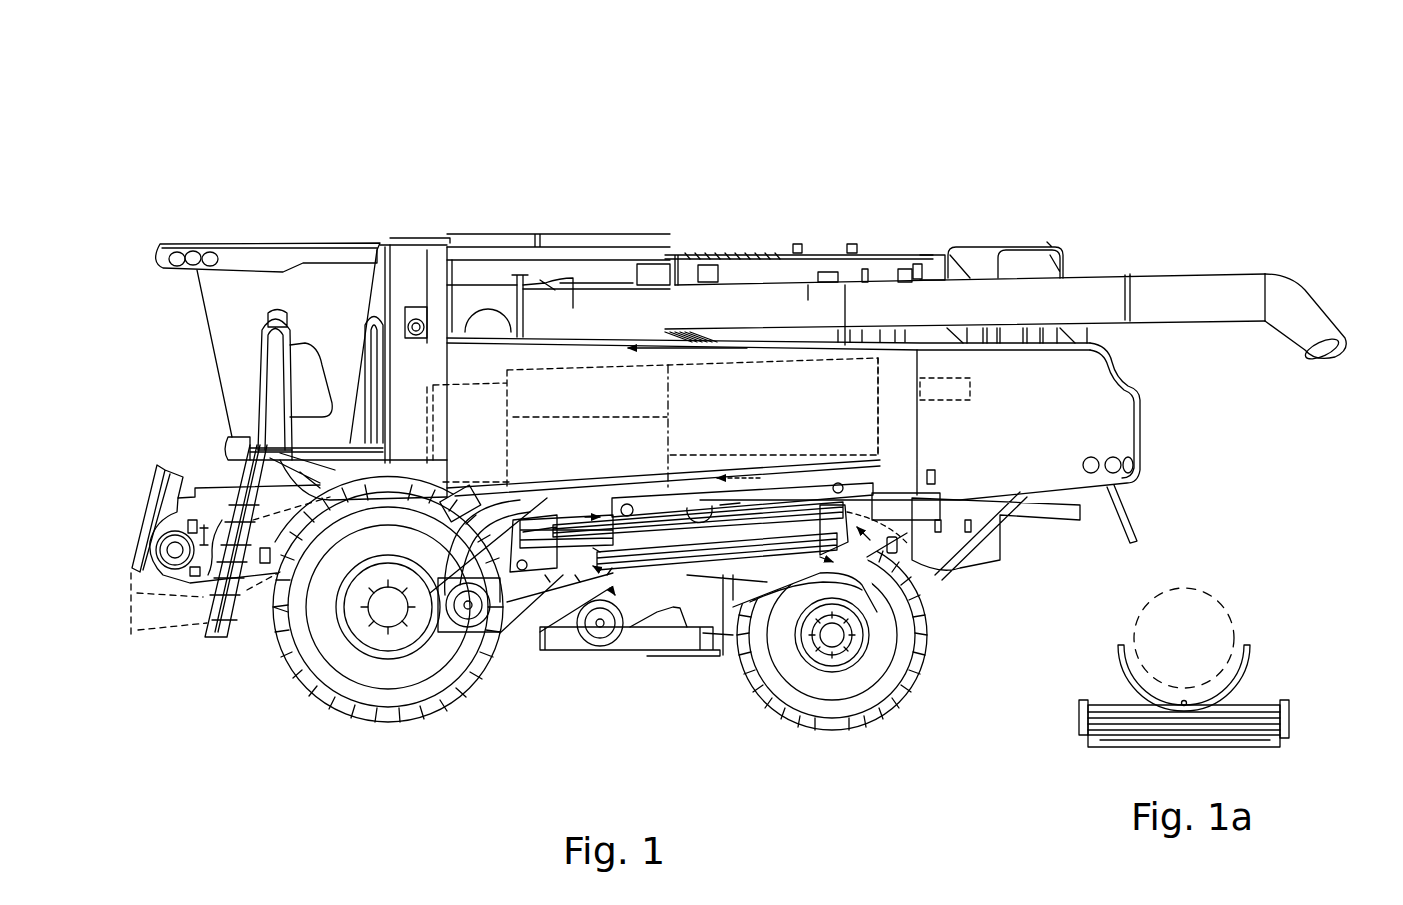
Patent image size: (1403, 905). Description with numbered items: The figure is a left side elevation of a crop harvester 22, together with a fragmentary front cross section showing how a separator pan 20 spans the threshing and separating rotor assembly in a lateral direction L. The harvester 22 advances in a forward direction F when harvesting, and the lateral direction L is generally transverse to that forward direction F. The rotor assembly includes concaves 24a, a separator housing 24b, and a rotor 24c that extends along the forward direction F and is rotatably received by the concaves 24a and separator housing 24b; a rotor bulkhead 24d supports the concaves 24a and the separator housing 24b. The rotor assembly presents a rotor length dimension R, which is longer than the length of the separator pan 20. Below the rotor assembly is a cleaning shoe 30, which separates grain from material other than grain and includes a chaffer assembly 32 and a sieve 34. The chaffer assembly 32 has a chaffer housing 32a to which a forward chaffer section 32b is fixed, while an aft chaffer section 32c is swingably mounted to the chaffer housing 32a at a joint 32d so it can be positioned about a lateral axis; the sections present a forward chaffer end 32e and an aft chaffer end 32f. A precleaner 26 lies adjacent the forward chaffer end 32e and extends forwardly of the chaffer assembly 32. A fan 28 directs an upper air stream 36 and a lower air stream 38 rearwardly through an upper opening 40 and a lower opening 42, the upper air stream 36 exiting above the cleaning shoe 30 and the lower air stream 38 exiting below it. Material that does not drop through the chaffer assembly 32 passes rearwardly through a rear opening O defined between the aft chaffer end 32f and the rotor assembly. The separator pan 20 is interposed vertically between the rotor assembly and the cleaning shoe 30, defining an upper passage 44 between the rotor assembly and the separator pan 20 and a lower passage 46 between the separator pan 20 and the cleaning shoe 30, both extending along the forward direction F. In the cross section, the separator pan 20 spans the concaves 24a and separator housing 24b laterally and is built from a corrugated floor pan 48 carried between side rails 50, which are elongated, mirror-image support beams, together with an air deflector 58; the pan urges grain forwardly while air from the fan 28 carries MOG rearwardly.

In FIG. 1, the separator pan 20 is at (875, 458).
In FIG. 1A, the separator pan 20 is at (1080, 735).
In FIG. 1, the harvester 22 is at (1142, 185).
In FIG. 1, the concaves 24a is at (600, 430).
In FIG. 1A, the concaves 24a is at (1255, 660).
In FIG. 1, the separator housing 24b is at (870, 358).
In FIG. 1, the rotor 24c is at (476, 395).
In FIG. 1A, the rotor 24c is at (1220, 590).
In FIG. 1, the rotor bulkhead 24d is at (672, 395).
In FIG. 1, the precleaner 26 is at (577, 460).
In FIG. 1, the fan 28 is at (467, 640).
In FIG. 1, the cleaning shoe 30 is at (724, 563).
In FIG. 1, the chaffer assembly 32 is at (660, 525).
In FIG. 1, the chaffer housing 32a is at (880, 535).
In FIG. 1, the forward chaffer section 32b is at (635, 503).
In FIG. 1, the aft chaffer section 32c is at (790, 515).
In FIG. 1, the joint 32d is at (725, 525).
In FIG. 1, the forward chaffer end 32e is at (612, 612).
In FIG. 1, the aft chaffer end 32f is at (868, 542).
In FIG. 1, the sieve 34 is at (668, 592).
In FIG. 1, the upper air stream 36 is at (553, 500).
In FIG. 1, the lower air stream 38 is at (553, 573).
In FIG. 1, the upper opening 40 is at (430, 593).
In FIG. 1, the lower opening 42 is at (549, 500).
In FIG. 1, the upper passage 44 is at (783, 490).
In FIG. 1, the lower passage 46 is at (775, 515).
In FIG. 1A, the corrugated floor pan 48 is at (1255, 705).
In FIG. 1A, the side rails 50 is at (1290, 716).
In FIG. 1A, the air deflector 58 is at (1248, 740).
In FIG. 1, the forward direction F is at (730, 345).
In FIG. 1, the rotor length dimension R is at (868, 250).
In FIG. 1, the rear opening O is at (928, 457).
In FIG. 1, the lateral direction L is at (745, 592).